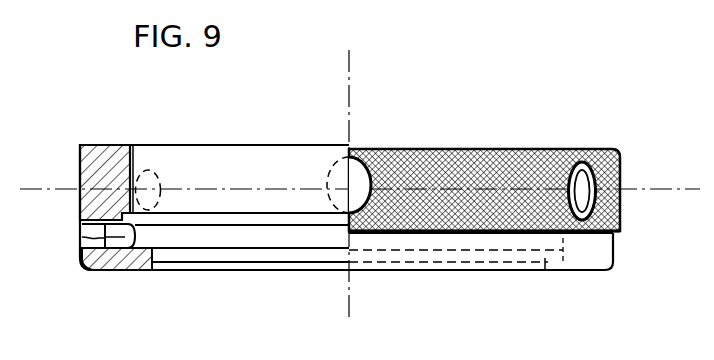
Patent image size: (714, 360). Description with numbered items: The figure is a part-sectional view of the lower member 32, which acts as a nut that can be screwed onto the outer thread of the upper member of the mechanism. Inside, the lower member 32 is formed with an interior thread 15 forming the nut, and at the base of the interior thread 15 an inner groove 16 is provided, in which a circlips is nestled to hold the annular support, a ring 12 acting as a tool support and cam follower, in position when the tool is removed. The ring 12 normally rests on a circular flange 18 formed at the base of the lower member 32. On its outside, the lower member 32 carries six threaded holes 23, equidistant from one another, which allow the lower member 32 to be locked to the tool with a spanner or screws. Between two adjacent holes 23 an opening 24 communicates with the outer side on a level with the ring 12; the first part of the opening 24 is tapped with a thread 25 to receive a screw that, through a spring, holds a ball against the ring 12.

The ring 12 is at (175, 249).
The interior thread 15 is at (132, 142).
The inner groove 16 is at (287, 225).
The circular flange 18 is at (213, 255).
The threaded holes 23 is at (157, 168).
The opening 24 is at (82, 229).
The thread 25 is at (85, 262).
The lower member 32 is at (563, 149).